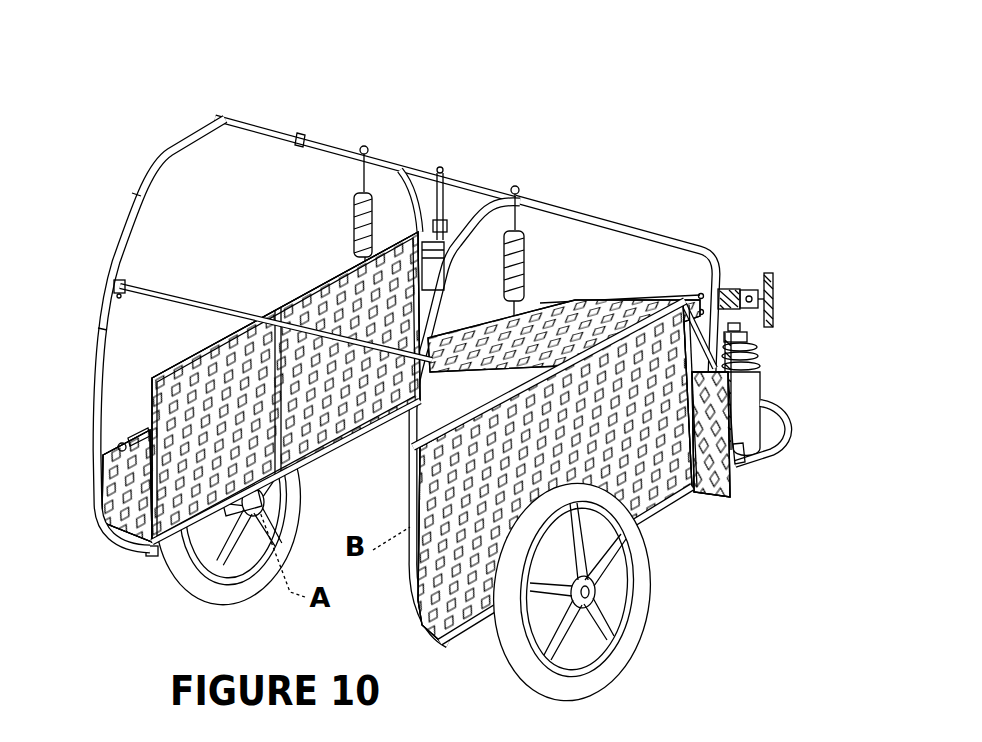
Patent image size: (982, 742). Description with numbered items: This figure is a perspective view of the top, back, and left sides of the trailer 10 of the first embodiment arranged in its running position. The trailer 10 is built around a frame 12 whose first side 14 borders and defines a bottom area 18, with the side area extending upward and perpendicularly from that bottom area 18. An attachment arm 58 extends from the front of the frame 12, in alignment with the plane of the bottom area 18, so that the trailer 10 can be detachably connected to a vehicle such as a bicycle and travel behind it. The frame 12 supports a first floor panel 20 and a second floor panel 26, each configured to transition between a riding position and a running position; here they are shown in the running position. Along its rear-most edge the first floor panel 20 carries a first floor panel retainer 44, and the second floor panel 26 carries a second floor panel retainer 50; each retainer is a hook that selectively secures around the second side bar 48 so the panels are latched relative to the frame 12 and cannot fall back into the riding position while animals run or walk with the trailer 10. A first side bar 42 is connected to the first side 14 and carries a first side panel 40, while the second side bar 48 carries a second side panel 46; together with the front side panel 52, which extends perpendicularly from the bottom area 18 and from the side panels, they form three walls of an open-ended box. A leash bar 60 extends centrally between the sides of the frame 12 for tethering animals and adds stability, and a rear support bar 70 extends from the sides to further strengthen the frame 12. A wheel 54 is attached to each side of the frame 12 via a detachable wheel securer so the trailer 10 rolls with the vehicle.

The trailer 10 is at (620, 107).
The frame 12 is at (190, 137).
The first side 14 is at (153, 558).
The bottom area 18 is at (340, 508).
The first floor panel 20 is at (305, 305).
The second floor panel 26 is at (620, 396).
The first side panel 40 is at (120, 482).
The first side bar 42 is at (118, 446).
The first floor panel retainer 44 is at (140, 438).
The second side panel 46 is at (728, 462).
The second side bar 48 is at (760, 383).
The second floor panel retainer 50 is at (478, 610).
The front side panel 52 is at (570, 302).
The wheel 54 is at (613, 625).
The attachment arm 58 is at (738, 289).
The leash bar 60 is at (408, 166).
The rear support bar 70 is at (167, 302).